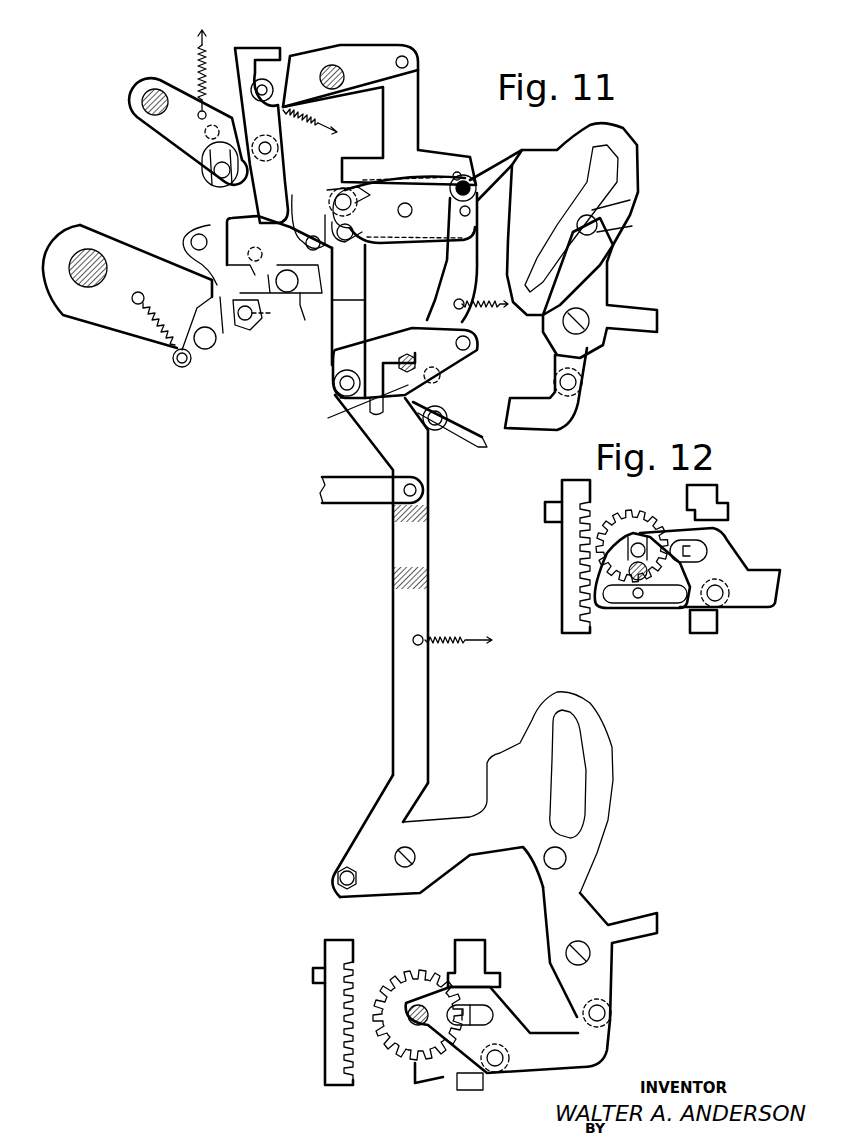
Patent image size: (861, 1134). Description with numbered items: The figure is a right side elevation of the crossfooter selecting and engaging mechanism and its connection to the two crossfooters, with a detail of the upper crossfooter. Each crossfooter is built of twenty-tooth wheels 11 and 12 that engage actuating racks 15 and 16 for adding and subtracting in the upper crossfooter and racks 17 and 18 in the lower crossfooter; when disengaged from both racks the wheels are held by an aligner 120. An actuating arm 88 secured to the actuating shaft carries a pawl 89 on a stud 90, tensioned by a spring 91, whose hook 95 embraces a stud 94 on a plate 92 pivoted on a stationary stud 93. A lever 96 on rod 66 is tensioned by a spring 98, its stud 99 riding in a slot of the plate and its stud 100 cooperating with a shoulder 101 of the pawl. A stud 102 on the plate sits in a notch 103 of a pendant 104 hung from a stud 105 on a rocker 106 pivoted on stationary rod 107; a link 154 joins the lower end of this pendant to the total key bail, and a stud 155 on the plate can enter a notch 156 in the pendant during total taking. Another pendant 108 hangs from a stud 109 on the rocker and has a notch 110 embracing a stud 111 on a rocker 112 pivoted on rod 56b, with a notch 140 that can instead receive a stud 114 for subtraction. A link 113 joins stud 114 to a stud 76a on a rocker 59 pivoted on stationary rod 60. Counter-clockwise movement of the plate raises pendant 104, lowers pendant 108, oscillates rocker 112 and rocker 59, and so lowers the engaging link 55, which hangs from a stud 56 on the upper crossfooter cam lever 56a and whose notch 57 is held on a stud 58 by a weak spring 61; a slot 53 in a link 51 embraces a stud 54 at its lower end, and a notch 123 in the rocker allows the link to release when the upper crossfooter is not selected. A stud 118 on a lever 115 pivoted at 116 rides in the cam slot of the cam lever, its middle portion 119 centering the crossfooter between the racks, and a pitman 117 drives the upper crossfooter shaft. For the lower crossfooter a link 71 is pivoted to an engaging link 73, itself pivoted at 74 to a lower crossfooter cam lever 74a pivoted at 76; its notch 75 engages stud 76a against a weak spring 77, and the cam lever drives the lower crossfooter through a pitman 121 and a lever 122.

In FIG. 12, the twenty tooth wheel 11 is at (635, 520).
In FIG. 11, the twenty tooth wheel 12 is at (415, 978).
In FIG. 11, the actuating rack 15 is at (65, 280).
In FIG. 12, the actuating rack 15 is at (710, 493).
In FIG. 12, the actuating rack 16 is at (562, 492).
In FIG. 11, the actuating rack 17 is at (486, 947).
In FIG. 11, the actuating rack 18 is at (325, 950).
In FIG. 11, the link 51 is at (485, 452).
In FIG. 11, the slot 53 is at (448, 410).
In FIG. 11, the stud 54 is at (440, 432).
In FIG. 11, the engaging link 55 is at (478, 268).
In FIG. 11, the stud 56 is at (470, 245).
In FIG. 11, the upper crossfooter cam lever 56a is at (560, 153).
In FIG. 11, the rod 56b is at (412, 208).
In FIG. 11, the notch 57 is at (442, 373).
In FIG. 11, the stud 58 is at (471, 344).
In FIG. 11, the rocker 59 is at (373, 431).
In FIG. 11, the stationary rod 60 is at (393, 340).
In FIG. 11, the weak spring 61 is at (483, 308).
In FIG. 11, the rod 66 is at (152, 90).
In FIG. 11, the link 71 is at (360, 498).
In FIG. 11, the engaging link 73 is at (429, 553).
In FIG. 11, the pivot 74 is at (336, 880).
In FIG. 11, the lower crossfooter cam lever 74a is at (512, 755).
In FIG. 11, the notch 75 is at (334, 380).
In FIG. 11, the pivot 76 is at (403, 868).
In FIG. 11, the stud 76a is at (338, 392).
In FIG. 11, the weak spring 77 is at (443, 636).
In FIG. 11, the actuating arm 88 is at (125, 332).
In FIG. 11, the pawl 89 is at (215, 345).
In FIG. 11, the stud 90 is at (190, 362).
In FIG. 11, the spring 91 is at (160, 345).
In FIG. 11, the plate 92 is at (230, 204).
In FIG. 11, the stationary stud 93 is at (263, 252).
In FIG. 11, the stud 94 is at (252, 328).
In FIG. 11, the hook 95 is at (270, 313).
In FIG. 11, the lever 96 is at (168, 140).
In FIG. 11, the spring 98 is at (198, 62).
In FIG. 11, the stud 99 is at (214, 178).
In FIG. 11, the stud 100 is at (214, 125).
In FIG. 11, the shoulder 101 is at (207, 292).
In FIG. 11, the stud 102 is at (300, 232).
In FIG. 11, the notch 103 is at (335, 225).
In FIG. 11, the pendant 104 is at (258, 243).
In FIG. 11, the stud 105 is at (266, 84).
In FIG. 11, the rocker 106 is at (340, 50).
In FIG. 11, the stationary rod 107 is at (333, 90).
In FIG. 11, the pendant 108 is at (419, 116).
In FIG. 11, the stud 109 is at (410, 60).
In FIG. 11, the notch 110 is at (462, 172).
In FIG. 11, the stud 111 is at (477, 180).
In FIG. 11, the rocker 112 is at (470, 205).
In FIG. 11, the link 113 is at (366, 297).
In FIG. 11, the stud 114 is at (366, 275).
In FIG. 11, the lever 115 is at (610, 288).
In FIG. 11, the pivot 116 is at (582, 330).
In FIG. 11, the pitman 117 is at (570, 415).
In FIG. 11, the stud 118 is at (600, 226).
In FIG. 11, the middle portion of cam slot 119 is at (630, 203).
In FIG. 11, the aligner 120 is at (447, 1085).
In FIG. 11, the pitman 121 is at (570, 1068).
In FIG. 11, the lever 122 is at (600, 900).
In FIG. 11, the notch 123 is at (405, 352).
In FIG. 11, the notch 140 is at (335, 190).
In FIG. 11, the link 154 is at (303, 320).
In FIG. 11, the stud 155 is at (190, 236).
In FIG. 11, the notch 156 is at (270, 268).